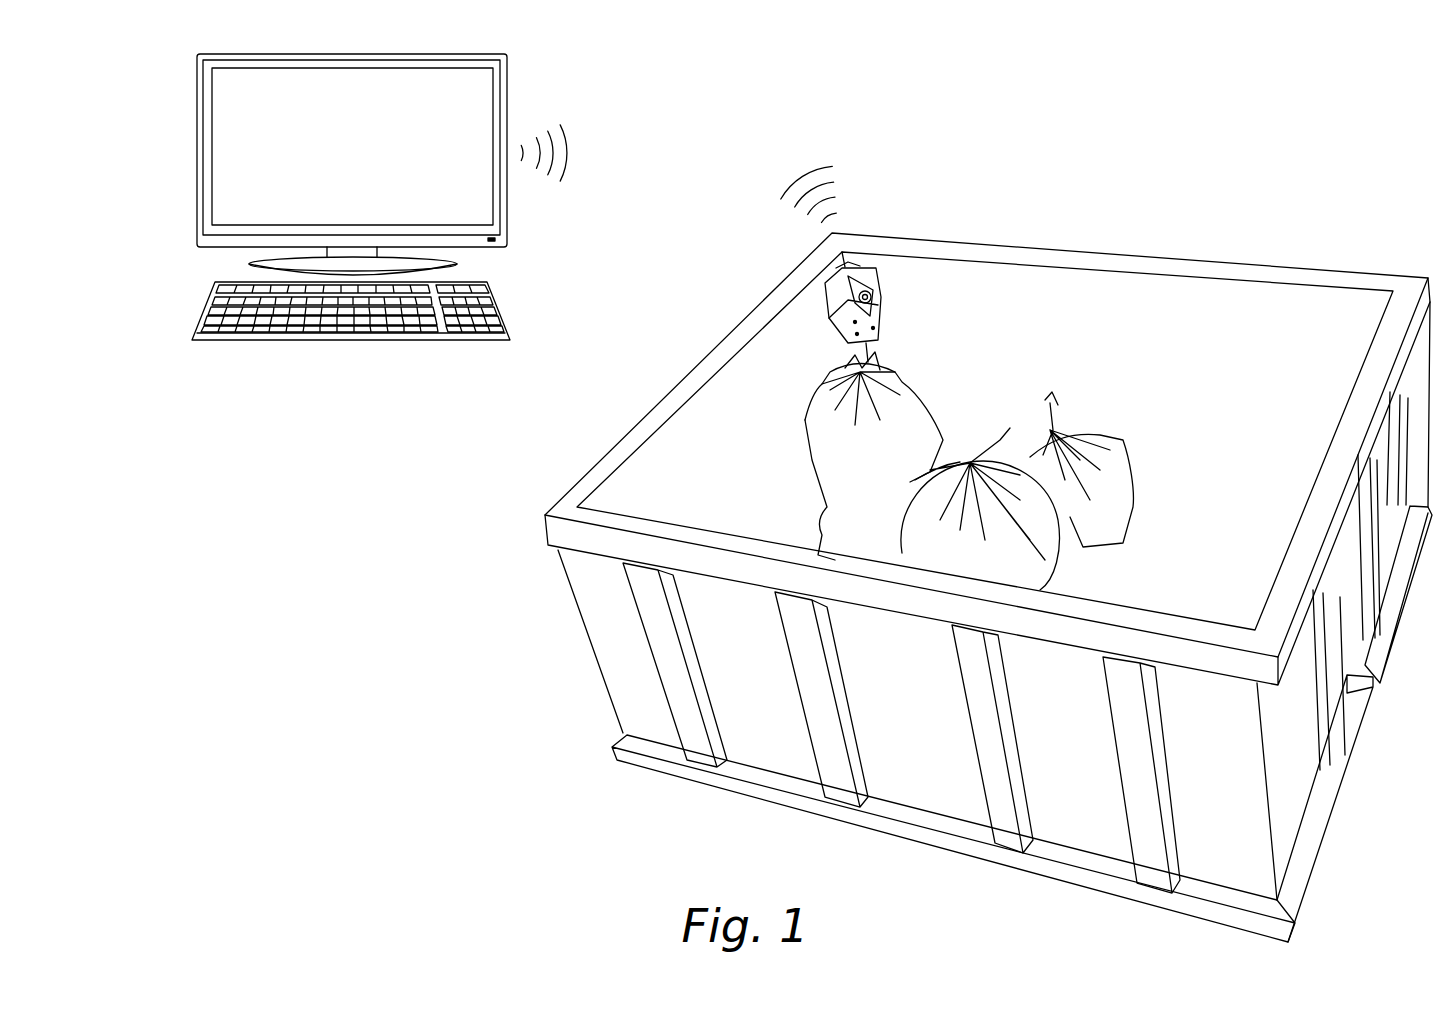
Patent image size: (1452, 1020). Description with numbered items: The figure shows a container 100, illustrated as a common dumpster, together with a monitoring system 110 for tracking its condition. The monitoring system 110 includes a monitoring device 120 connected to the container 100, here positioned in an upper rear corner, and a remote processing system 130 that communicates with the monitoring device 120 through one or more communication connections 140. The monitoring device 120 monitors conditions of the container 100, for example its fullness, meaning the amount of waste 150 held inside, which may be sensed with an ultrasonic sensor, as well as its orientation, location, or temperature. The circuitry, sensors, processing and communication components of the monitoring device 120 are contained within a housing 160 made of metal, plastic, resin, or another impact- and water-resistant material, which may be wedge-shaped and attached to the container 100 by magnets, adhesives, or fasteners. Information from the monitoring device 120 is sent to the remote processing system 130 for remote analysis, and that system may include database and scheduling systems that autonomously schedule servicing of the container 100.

The container 100 is at (1197, 253).
The monitoring system 110 is at (821, 204).
The monitoring device 120 is at (862, 278).
The remote processing system 130 is at (232, 115).
The communication connections 140 is at (596, 153).
The waste 150 is at (1002, 495).
The housing 160 is at (820, 278).